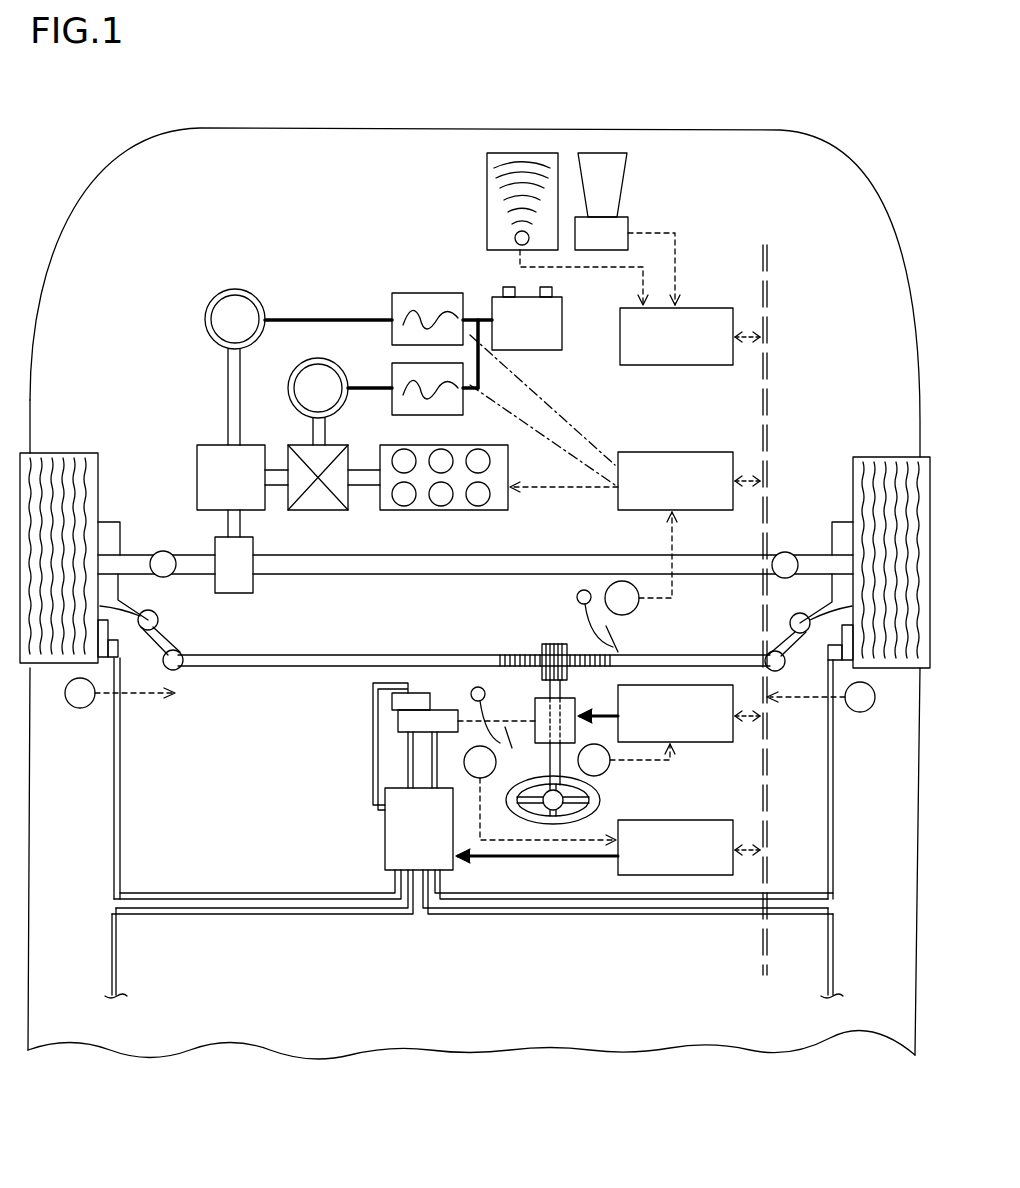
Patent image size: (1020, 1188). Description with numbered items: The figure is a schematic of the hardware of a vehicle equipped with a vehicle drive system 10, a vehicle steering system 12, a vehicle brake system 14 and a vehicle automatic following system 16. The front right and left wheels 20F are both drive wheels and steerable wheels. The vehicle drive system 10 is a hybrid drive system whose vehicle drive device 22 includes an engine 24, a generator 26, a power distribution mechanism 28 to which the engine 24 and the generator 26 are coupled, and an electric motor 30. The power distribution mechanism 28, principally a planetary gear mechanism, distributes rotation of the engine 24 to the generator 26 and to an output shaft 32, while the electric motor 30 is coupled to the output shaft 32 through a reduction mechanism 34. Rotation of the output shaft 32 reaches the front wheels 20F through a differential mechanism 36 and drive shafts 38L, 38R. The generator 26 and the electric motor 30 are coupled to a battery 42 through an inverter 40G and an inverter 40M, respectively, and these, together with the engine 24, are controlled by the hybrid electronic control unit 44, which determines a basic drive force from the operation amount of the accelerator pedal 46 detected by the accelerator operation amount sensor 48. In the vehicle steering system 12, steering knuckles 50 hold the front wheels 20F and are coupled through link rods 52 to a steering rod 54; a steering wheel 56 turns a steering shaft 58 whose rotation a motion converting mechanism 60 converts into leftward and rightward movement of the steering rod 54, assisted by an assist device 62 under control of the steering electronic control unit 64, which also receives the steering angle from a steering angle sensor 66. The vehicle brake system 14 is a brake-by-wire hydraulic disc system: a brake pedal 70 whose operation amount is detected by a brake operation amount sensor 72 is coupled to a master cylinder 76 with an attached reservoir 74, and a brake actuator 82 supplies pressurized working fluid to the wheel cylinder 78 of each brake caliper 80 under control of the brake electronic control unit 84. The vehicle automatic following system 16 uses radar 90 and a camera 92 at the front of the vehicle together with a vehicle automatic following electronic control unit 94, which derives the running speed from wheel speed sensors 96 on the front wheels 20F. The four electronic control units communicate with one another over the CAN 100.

The vehicle drive system 10 is at (168, 235).
The vehicle steering system 12 is at (688, 645).
The vehicle brake system 14 is at (465, 975).
The vehicle automatic following system 16 is at (705, 200).
The front wheels 20F is at (40, 453).
The vehicle drive device 22 is at (148, 280).
The engine 24 is at (465, 505).
The generator 26 is at (297, 372).
The power distribution mechanism 28 is at (325, 505).
The electric motor 30 is at (258, 295).
The output shaft 32 is at (243, 525).
The reduction mechanism 34 is at (215, 452).
The differential mechanism 36 is at (245, 590).
The drive shaft 38L is at (190, 555).
The drive shaft 38R is at (508, 555).
The inverter 40M is at (400, 300).
The inverter 40G is at (400, 372).
The battery 42 is at (540, 342).
The hybrid electronic control unit 44 is at (630, 455).
The accelerator pedal 46 is at (580, 615).
The accelerator operation amount sensor 48 is at (628, 612).
The steering knuckles 50 is at (110, 525).
The link rods 52 is at (165, 633).
The steering rod 54 is at (335, 655).
The steering wheel 56 is at (600, 800).
The steering shaft 58 is at (502, 655).
The motion converting mechanism 60 is at (545, 650).
The assist device 62 is at (572, 703).
The steering electronic control unit 64 is at (705, 745).
The steering angle sensor 66 is at (612, 770).
The brake pedal 70 is at (495, 722).
The brake operation amount sensor 72 is at (490, 795).
The reservoir 74 is at (392, 700).
The master cylinder 76 is at (407, 725).
The wheel cylinder 78 is at (118, 644).
The brake calipers 80 is at (97, 650).
The brake actuator 82 is at (398, 830).
The brake electronic control unit 84 is at (700, 820).
The radar 90 is at (487, 172).
The camera 92 is at (622, 172).
The vehicle automatic following electronic control unit 94 is at (690, 305).
The wheel speed sensors 96 is at (84, 708).
The CAN 100 is at (767, 260).